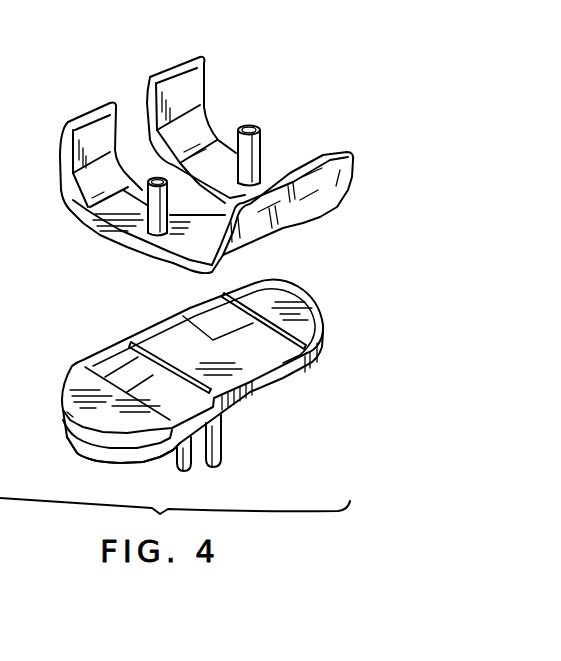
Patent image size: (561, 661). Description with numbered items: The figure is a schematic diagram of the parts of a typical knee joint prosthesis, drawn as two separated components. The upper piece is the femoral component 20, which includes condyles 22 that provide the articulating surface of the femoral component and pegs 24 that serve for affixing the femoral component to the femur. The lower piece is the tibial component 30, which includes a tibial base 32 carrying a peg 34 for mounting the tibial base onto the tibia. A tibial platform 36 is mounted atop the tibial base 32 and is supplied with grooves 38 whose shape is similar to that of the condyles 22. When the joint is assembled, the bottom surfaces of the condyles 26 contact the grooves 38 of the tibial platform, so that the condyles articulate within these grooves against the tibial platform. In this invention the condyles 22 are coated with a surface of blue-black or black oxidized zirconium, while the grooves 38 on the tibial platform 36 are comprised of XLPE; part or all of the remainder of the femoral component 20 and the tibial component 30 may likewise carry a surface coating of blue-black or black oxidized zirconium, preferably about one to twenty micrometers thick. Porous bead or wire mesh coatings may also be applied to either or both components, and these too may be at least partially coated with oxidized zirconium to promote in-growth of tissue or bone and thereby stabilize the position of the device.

The femoral component 20 is at (180, 165).
The condyles 22 is at (207, 73).
The pegs 24 is at (261, 147).
The bottom surfaces of the condyles 26 is at (110, 240).
The tibial component 30 is at (188, 358).
The tibial base 32 is at (78, 447).
The peg 34 is at (222, 434).
The tibial platform 36 is at (67, 421).
The grooves 38 is at (197, 311).